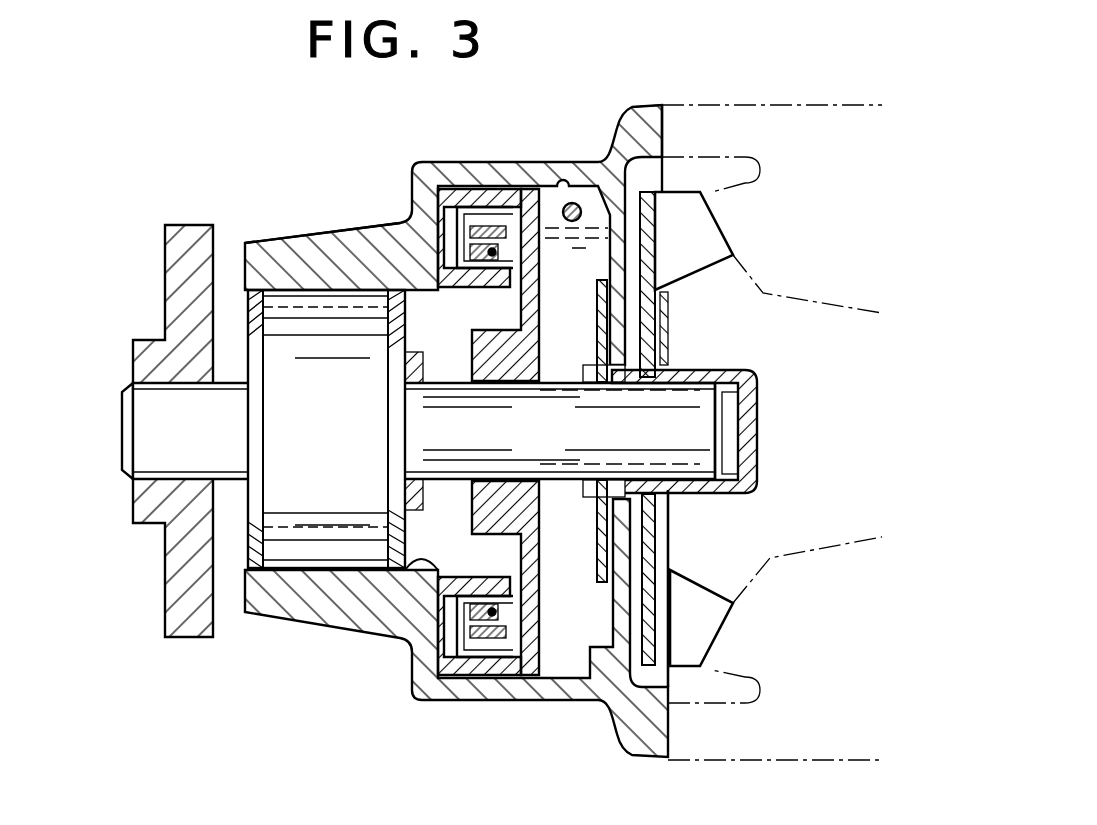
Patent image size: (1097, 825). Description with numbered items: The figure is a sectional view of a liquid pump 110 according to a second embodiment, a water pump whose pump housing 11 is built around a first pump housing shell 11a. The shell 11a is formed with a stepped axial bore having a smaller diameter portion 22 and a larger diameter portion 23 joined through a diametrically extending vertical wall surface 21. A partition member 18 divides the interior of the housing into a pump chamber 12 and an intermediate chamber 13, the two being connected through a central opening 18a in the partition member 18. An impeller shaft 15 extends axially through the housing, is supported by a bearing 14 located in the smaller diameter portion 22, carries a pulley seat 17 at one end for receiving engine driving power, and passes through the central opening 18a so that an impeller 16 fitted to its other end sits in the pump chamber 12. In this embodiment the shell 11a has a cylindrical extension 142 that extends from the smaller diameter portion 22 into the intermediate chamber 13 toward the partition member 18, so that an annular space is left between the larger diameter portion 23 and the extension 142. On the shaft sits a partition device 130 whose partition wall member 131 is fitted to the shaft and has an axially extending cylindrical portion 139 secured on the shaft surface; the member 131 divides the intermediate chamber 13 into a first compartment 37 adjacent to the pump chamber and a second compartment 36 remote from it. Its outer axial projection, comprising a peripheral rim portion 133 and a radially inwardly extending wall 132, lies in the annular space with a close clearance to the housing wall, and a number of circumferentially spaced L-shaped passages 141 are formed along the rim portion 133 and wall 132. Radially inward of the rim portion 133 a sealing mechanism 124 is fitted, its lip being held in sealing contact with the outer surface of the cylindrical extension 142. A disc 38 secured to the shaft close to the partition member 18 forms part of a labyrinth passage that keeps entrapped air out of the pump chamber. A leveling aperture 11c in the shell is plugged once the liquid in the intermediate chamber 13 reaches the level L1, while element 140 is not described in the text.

The liquid pump 110 is at (453, 416).
The pump housing 11 is at (453, 220).
The first pump housing shell 11a is at (297, 608).
The leveling aperture 11c is at (634, 117).
The axially extending cylindrical portion 139 is at (292, 246).
The intermediate chamber 13 is at (544, 238).
The partition device 130 is at (543, 342).
The partition wall member 131 is at (540, 298).
The radially inwardly extending wall 132 is at (424, 189).
The peripheral rim portion 133 is at (487, 198).
The sealing member 140 is at (512, 220).
The larger diameter portion 23 is at (567, 195).
The level L1 is at (660, 150).
The pump chamber 12 is at (655, 160).
The impeller 16 is at (698, 235).
The partition member 18 is at (672, 641).
The central opening 18a is at (620, 481).
The bearing 14 is at (313, 484).
The impeller shaft 15 is at (529, 445).
The pulley seat 17 is at (173, 572).
The second compartment 36 is at (434, 539).
The first compartment 37 is at (557, 579).
The disc 38 is at (583, 600).
The vertical wall surface 21 is at (458, 664).
The smaller diameter portion 22 is at (407, 567).
The sealing mechanism 124 is at (493, 643).
The passages 141 is at (528, 648).
The cylindrical extension 142 is at (417, 652).